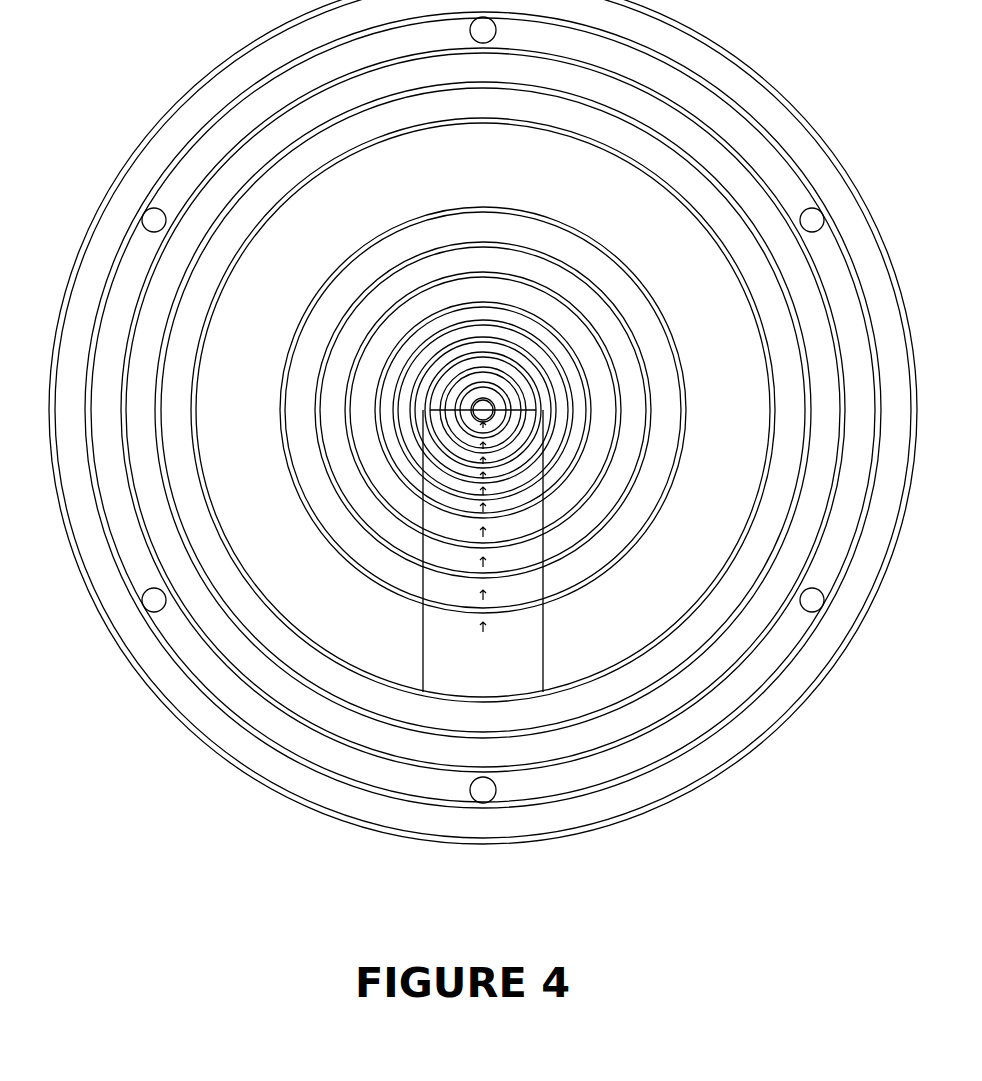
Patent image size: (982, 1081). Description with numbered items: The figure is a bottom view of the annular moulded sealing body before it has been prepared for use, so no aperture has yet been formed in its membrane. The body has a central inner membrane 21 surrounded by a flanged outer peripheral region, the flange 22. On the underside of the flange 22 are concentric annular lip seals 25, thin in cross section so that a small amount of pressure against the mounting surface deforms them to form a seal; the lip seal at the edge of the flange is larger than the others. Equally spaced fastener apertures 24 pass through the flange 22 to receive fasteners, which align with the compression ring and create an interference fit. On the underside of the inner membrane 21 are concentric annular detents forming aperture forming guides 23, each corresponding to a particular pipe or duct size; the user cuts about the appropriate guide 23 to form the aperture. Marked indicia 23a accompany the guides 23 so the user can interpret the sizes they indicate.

The inner membrane region 21 is at (270, 587).
The flange 22 is at (163, 160).
The aperture forming guides 23 is at (653, 525).
The marked indicia 23a is at (545, 622).
The fastener apertures 24 is at (478, 792).
The annular lip seal 25 is at (90, 237).